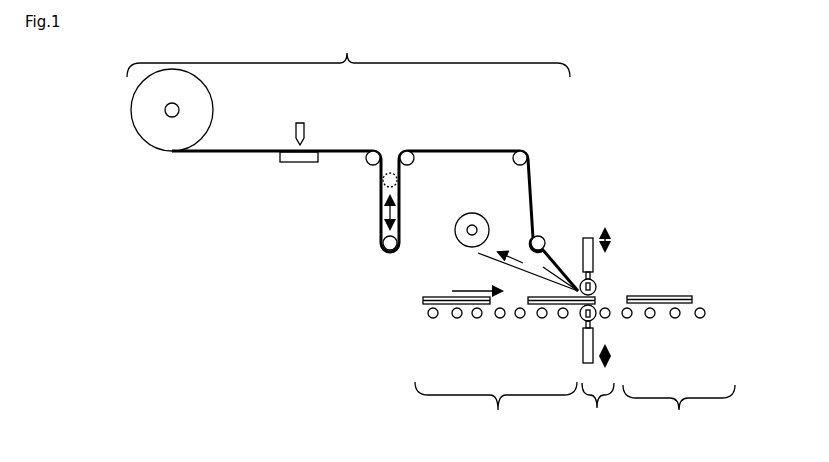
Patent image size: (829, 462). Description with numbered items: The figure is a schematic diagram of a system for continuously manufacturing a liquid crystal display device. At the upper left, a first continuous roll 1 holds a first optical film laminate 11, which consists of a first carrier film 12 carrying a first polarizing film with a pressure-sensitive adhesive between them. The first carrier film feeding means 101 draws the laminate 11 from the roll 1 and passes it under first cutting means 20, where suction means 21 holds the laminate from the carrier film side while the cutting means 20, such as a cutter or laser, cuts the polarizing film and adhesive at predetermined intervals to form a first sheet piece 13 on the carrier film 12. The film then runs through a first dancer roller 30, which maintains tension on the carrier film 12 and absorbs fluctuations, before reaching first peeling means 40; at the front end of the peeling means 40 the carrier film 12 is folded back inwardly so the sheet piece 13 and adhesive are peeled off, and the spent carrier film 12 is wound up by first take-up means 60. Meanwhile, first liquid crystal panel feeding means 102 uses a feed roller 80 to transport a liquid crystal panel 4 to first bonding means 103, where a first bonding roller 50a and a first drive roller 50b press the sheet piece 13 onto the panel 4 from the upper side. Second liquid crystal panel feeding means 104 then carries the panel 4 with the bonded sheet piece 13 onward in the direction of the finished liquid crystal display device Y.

The first continuous roll 1 is at (145, 138).
The first optical film laminate 11 is at (229, 150).
The first cutting means 20 is at (301, 122).
The suction means 21 is at (290, 163).
The first dancer roller 30 is at (376, 220).
The first take-up means 60 is at (467, 227).
The first carrier film 12 is at (478, 253).
The first peeling means 40 is at (550, 268).
The first bonding roller 50a is at (596, 287).
The first drive roller 50b is at (580, 318).
The liquid crystal panel 4 is at (422, 297).
The first sheet piece 13 is at (668, 296).
The liquid crystal display device Y is at (694, 290).
The feed roller 80 is at (436, 330).
The first carrier film feeding means 101 is at (348, 54).
The first liquid crystal panel feeding means 102 is at (496, 409).
The first bonding means 103 is at (598, 410).
The second liquid crystal panel feeding means 104 is at (679, 410).